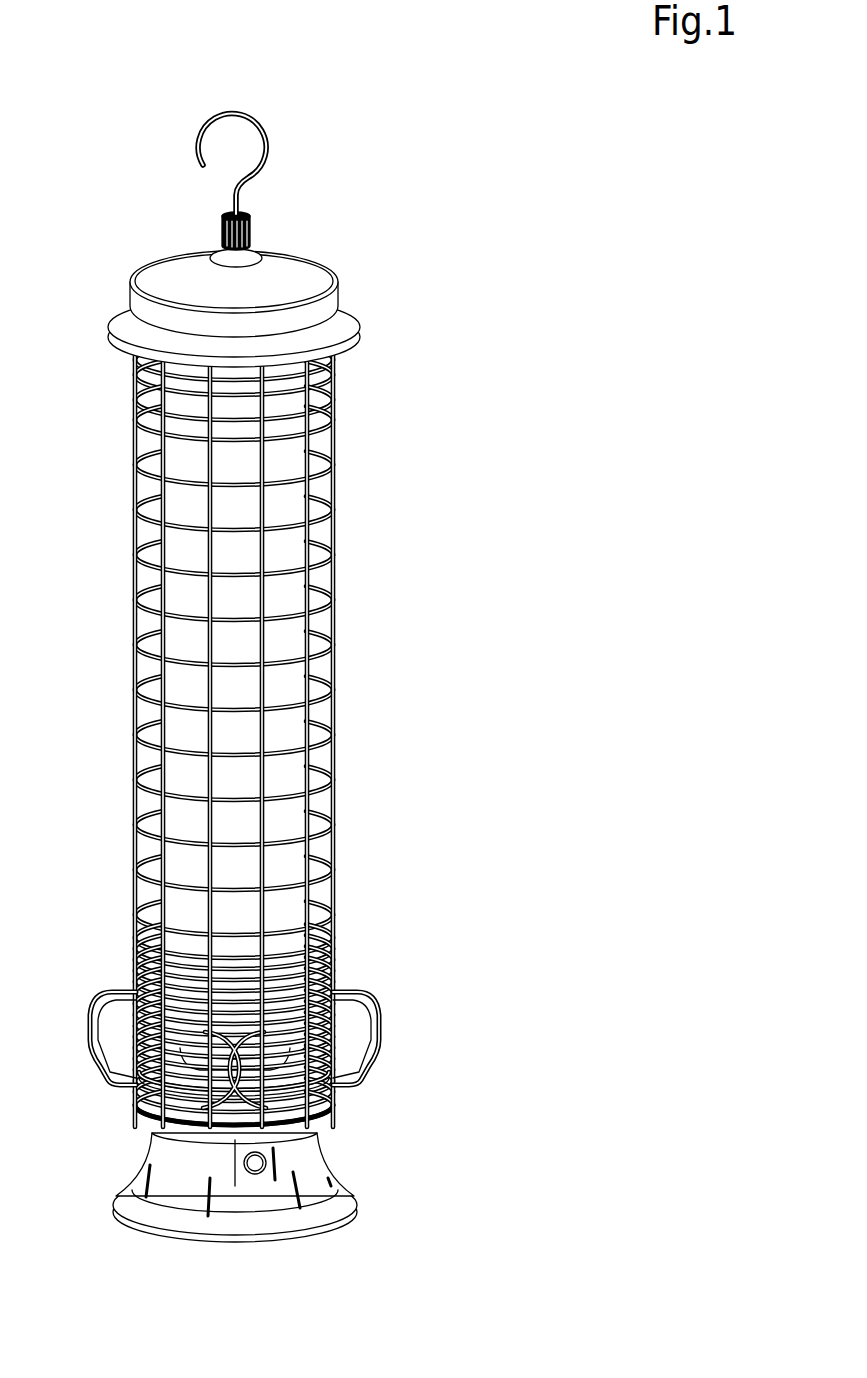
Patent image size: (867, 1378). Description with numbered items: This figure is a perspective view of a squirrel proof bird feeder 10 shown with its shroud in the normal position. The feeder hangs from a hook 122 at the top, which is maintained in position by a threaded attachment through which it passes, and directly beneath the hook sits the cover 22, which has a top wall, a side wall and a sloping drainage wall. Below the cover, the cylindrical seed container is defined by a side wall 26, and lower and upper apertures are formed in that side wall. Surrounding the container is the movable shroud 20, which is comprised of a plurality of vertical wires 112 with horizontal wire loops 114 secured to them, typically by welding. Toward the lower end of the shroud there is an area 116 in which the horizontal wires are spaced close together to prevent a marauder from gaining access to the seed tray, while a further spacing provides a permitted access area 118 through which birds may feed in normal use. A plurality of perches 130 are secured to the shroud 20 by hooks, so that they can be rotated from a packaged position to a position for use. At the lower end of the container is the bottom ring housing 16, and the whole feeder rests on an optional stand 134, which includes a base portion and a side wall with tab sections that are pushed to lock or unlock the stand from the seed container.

The squirrel proof bird feeder 10 is at (465, 195).
The hook 122 is at (261, 140).
The cover 22 is at (327, 260).
The side wall 26 is at (283, 502).
The horizontal wire loops 114 is at (290, 570).
The vertical wires 112 is at (260, 633).
The movable shroud 20 is at (345, 755).
The area of closely spaced horizontal wires 116 is at (345, 973).
The permitted access area 118 is at (340, 1055).
The perches 130 is at (108, 992).
The bottom ring housing 16 is at (130, 1093).
The stand 134 is at (345, 1168).